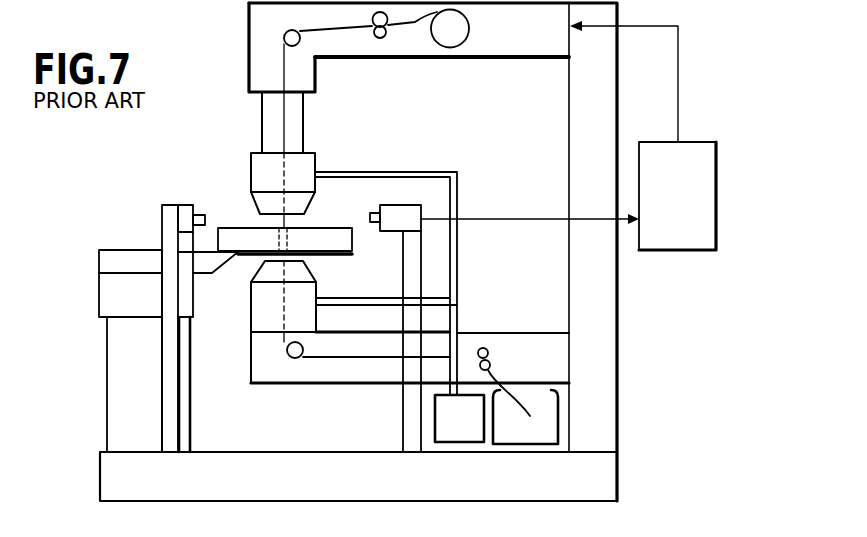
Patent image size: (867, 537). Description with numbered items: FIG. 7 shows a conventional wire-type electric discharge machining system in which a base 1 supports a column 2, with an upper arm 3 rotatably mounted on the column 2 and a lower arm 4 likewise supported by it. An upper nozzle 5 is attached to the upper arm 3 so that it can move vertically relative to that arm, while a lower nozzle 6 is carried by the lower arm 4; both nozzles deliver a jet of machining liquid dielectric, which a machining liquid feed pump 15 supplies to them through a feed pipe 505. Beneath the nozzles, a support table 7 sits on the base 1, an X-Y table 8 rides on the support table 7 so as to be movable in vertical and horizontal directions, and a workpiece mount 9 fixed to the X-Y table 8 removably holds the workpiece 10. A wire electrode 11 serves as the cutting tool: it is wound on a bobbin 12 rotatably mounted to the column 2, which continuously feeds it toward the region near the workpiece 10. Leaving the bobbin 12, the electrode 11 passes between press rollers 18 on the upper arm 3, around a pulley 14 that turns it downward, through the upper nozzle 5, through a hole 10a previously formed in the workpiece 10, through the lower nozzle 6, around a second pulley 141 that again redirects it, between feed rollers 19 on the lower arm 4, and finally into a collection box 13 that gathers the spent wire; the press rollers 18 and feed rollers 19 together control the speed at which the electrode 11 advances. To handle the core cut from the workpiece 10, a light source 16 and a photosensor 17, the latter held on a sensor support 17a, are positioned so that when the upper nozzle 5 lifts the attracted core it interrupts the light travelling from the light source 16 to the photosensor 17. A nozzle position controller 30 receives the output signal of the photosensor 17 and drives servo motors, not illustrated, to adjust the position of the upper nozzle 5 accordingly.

The base 1 is at (577, 487).
The column 2 is at (619, 348).
The upper arm 3 is at (548, 44).
The lower arm 4 is at (542, 347).
The upper nozzle 5 is at (258, 172).
The lower nozzle 6 is at (258, 300).
The support table 7 is at (120, 388).
The X-Y table 8 is at (110, 295).
The workpiece mount 9 is at (110, 257).
The workpiece 10 is at (328, 233).
The hole 10a is at (340, 257).
The wire electrode 11 is at (342, 28).
The bobbin 12 is at (462, 47).
The collection box 13 is at (558, 432).
The pulley 14 is at (286, 35).
The machining liquid feed pump 15 is at (468, 430).
The light source 16 is at (190, 208).
The photosensor 17 is at (395, 215).
The sensor support 17a is at (410, 413).
The press rollers 18 is at (385, 40).
The feed rollers 19 is at (483, 347).
The nozzle position controller 30 is at (700, 230).
The pulley 141 is at (304, 358).
The feed pipe 505 is at (357, 143).